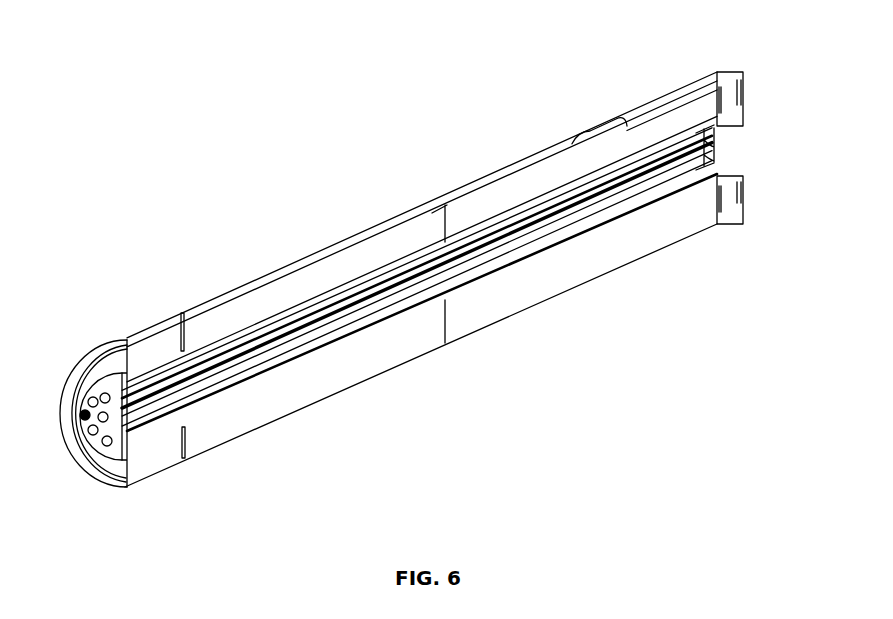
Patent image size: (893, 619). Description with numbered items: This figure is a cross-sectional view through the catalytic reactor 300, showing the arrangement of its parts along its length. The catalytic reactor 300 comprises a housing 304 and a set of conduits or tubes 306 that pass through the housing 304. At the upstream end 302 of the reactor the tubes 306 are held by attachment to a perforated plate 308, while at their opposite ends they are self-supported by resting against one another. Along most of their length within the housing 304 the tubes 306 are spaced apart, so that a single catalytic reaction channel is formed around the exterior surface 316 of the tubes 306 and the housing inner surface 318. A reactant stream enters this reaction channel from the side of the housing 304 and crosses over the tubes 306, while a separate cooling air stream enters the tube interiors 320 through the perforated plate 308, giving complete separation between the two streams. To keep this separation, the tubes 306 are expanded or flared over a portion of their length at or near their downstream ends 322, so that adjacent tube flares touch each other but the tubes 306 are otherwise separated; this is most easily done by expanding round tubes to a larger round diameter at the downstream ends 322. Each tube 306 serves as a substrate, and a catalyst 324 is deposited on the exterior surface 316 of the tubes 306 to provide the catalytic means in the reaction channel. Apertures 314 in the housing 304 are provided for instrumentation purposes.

The catalytic reactor 300 is at (268, 236).
The upstream end 302 is at (49, 392).
The housing 304 is at (345, 262).
The tubes 306 is at (290, 351).
The perforated plate 308 is at (122, 445).
The apertures 314 is at (181, 314).
The exterior surface 316 is at (478, 260).
The housing inner surface 318 is at (734, 168).
The tube interiors 320 is at (83, 417).
The downstream ends 322 is at (716, 147).
The catalyst 324 is at (550, 230).